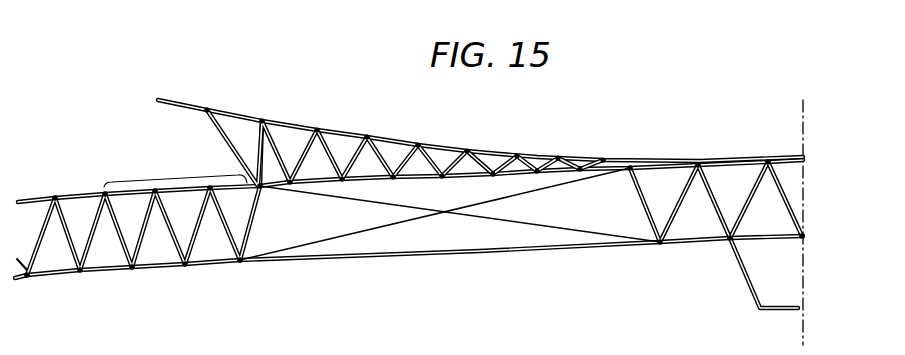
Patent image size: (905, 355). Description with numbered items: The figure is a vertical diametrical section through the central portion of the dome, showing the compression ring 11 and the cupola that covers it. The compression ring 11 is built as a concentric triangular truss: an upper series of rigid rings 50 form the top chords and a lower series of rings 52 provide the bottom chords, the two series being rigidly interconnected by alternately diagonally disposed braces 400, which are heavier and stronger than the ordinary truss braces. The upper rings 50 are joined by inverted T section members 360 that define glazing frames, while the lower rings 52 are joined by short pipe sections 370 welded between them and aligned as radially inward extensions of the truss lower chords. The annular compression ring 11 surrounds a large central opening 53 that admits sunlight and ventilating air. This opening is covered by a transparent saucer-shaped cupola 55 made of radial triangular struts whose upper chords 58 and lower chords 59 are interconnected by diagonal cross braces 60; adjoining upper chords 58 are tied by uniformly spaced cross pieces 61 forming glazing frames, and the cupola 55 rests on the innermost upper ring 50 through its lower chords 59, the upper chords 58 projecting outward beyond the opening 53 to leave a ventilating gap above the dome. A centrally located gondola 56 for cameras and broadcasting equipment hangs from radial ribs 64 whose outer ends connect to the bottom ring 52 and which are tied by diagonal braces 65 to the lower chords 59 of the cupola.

The compression ring 11 is at (150, 182).
The upper rings 50 is at (105, 194).
The lower rings 52 is at (133, 264).
The central opening 53 is at (482, 232).
The saucer-shaped cupola 55 is at (548, 137).
The gondola 56 is at (748, 290).
The upper chords 58 is at (401, 136).
The lower chords 59 is at (358, 190).
The diagonal cross braces 60 is at (354, 157).
The cross pieces 61 is at (318, 129).
The radial ribs 64 is at (596, 250).
The diagonal braces 65 is at (641, 202).
The inverted T section members 360 is at (77, 194).
The pipe sections 370 is at (124, 268).
The diagonal braces 400 is at (123, 243).